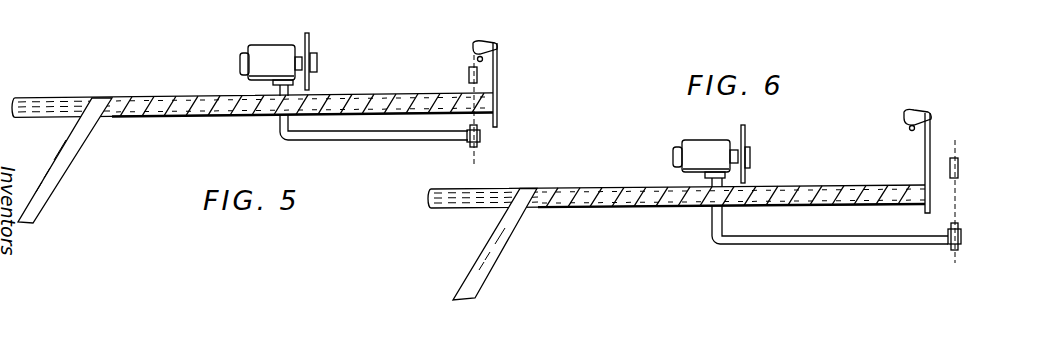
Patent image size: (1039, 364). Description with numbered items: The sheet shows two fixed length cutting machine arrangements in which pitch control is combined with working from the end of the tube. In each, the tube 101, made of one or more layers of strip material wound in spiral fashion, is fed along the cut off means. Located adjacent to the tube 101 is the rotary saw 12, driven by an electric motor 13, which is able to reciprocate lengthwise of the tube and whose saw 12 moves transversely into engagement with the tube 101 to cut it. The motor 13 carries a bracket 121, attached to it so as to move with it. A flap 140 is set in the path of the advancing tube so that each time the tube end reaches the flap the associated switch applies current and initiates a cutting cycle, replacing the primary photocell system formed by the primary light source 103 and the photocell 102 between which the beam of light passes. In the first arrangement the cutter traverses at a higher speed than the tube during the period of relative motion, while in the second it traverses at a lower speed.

In FIG. 5, the rotary saw 12 is at (310, 36).
In FIG. 6, the rotary saw 12 is at (746, 133).
In FIG. 5, the electric motor 13 is at (266, 52).
In FIG. 6, the electric motor 13 is at (698, 150).
In FIG. 5, the tube 101 is at (167, 96).
In FIG. 6, the tube 101 is at (607, 207).
In FIG. 5, the photocell 102 is at (481, 138).
In FIG. 6, the photocell 102 is at (961, 236).
In FIG. 5, the primary light source 103 is at (468, 76).
In FIG. 6, the primary light source 103 is at (958, 166).
In FIG. 5, the bracket 121 is at (371, 141).
In FIG. 6, the bracket 121 is at (847, 248).
In FIG. 5, the flap 140 is at (499, 80).
In FIG. 6, the flap 140 is at (931, 150).